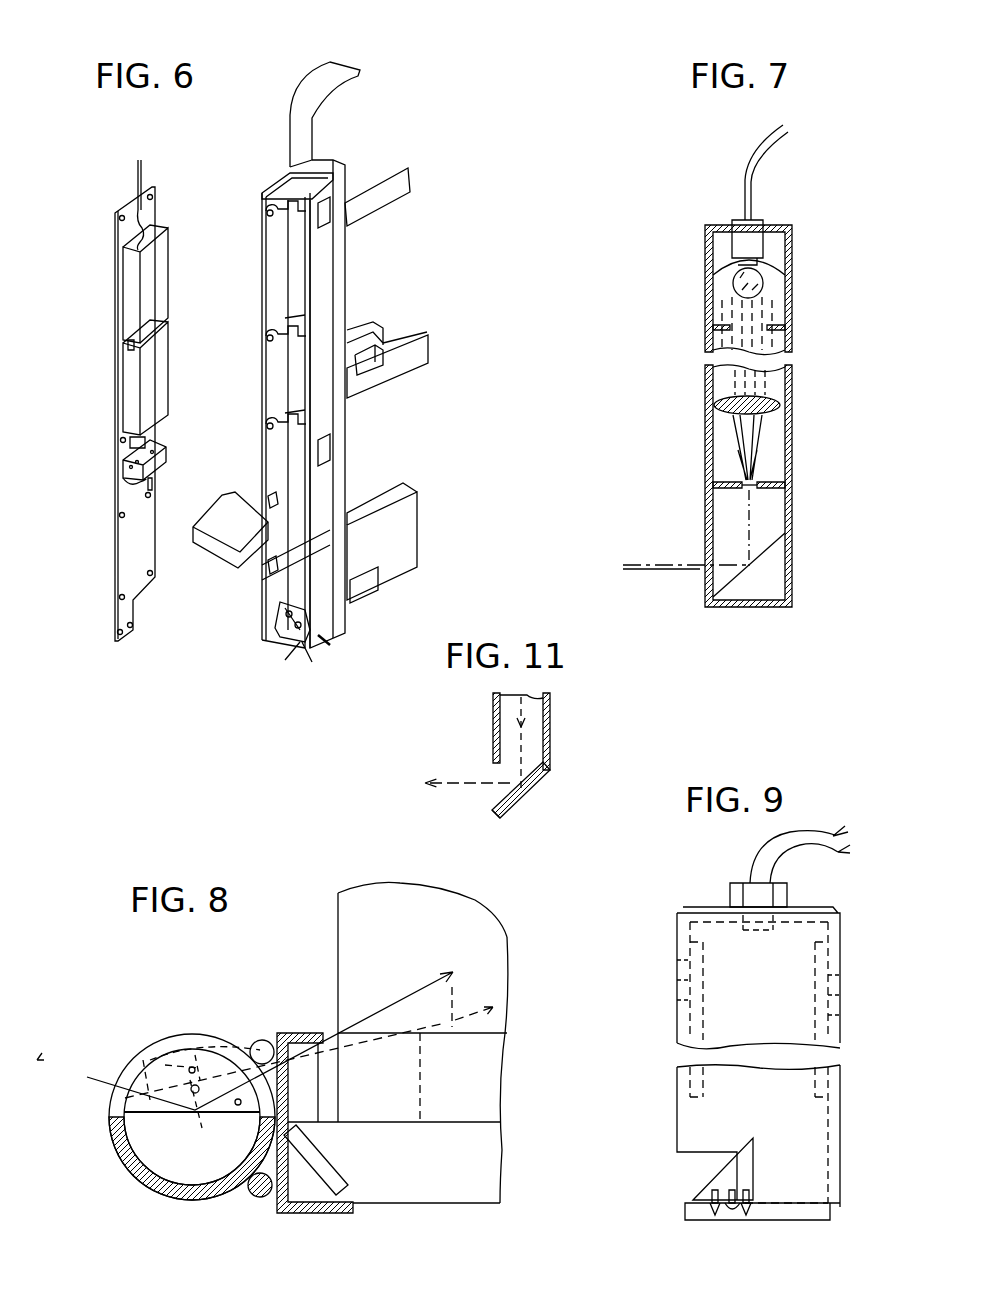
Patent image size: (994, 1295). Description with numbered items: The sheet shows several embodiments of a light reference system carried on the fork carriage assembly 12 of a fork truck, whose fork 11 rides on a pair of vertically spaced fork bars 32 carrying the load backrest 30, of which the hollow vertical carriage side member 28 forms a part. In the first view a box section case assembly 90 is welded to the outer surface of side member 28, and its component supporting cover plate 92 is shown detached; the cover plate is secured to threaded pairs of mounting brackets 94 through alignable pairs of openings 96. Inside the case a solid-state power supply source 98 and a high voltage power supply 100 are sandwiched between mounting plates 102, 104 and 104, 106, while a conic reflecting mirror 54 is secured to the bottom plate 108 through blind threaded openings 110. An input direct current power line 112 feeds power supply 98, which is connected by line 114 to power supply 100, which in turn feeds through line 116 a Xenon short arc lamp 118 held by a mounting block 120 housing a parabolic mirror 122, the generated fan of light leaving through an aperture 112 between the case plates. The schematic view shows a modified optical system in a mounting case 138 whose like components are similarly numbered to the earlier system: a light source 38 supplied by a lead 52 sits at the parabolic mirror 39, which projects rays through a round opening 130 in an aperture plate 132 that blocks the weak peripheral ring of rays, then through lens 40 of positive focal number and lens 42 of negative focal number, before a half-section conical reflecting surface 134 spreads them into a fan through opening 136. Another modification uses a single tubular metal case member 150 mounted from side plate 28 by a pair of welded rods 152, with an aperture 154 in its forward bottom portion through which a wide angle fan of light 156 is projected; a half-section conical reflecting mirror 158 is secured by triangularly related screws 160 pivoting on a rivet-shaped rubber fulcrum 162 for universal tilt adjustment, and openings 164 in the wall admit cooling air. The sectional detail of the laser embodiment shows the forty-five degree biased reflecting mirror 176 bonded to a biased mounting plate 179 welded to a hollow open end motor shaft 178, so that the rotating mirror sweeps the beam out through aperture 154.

In FIG. 6, the fork 11 is at (226, 503).
In FIG. 8, the fork 11 is at (355, 915).
In FIG. 6, the fork carriage assembly 12 is at (420, 451).
In FIG. 6, the fork carriage side member 28 is at (345, 290).
In FIG. 8, the fork carriage side member 28 is at (280, 1213).
In FIG. 6, the load backrest 30 is at (345, 87).
In FIG. 6, the fork bars 32 is at (432, 365).
In FIG. 8, the fork bars 32 is at (420, 1185).
In FIG. 7, the lamp bulb 38 is at (762, 290).
In FIG. 7, the parabolic mirror 39 is at (770, 265).
In FIG. 7, the first lens 40 is at (787, 400).
In FIG. 7, the second lens 42 is at (765, 483).
In FIG. 7, the cable 52 is at (768, 150).
In FIG. 6, the conic reflecting mirror 54 is at (282, 633).
In FIG. 6, the box section case assembly 90 is at (340, 634).
In FIG. 6, the cover plate 92 is at (130, 553).
In FIG. 6, the mounting brackets 94 is at (275, 207).
In FIG. 6, the openings 96 is at (152, 198).
In FIG. 6, the solid-state power supply source 98 is at (130, 278).
In FIG. 6, the high voltage power supply 100 is at (125, 382).
In FIG. 6, the mounting plate 102 is at (283, 183).
In FIG. 6, the mounting plate 104 is at (285, 320).
In FIG. 6, the mounting plate 106 is at (285, 415).
In FIG. 6, the bottom plate 108 is at (275, 655).
In FIG. 6, the blind threaded openings 110 is at (272, 622).
In FIG. 6, the input direct current power line 112 is at (135, 185).
In FIG. 9, the input direct current power line 112 is at (805, 850).
In FIG. 6, the line 114 is at (128, 342).
In FIG. 6, the line 116 is at (135, 440).
In FIG. 6, the Xenon short arc lamp 118 is at (150, 483).
In FIG. 6, the mounting block 120 is at (123, 465).
In FIG. 6, the parabolic mirror 122 is at (125, 477).
In FIG. 7, the round opening 130 is at (738, 330).
In FIG. 7, the aperture plate 132 is at (775, 332).
In FIG. 7, the half-section conical reflecting surface 134 is at (770, 583).
In FIG. 7, the opening 136 is at (705, 560).
In FIG. 7, the mounting case 138 is at (790, 517).
In FIG. 8, the tubular metal case member 150 is at (152, 1185).
In FIG. 8, the rods 152 is at (265, 1042).
In FIG. 11, the aperture 154 is at (492, 765).
In FIG. 8, the aperture 154 is at (180, 1038).
In FIG. 9, the aperture 154 is at (702, 1160).
In FIG. 8, the fan of light 156 is at (75, 1072).
In FIG. 8, the half-section conical reflecting mirror 158 is at (218, 1068).
In FIG. 9, the half-section conical reflecting mirror 158 is at (725, 1182).
In FIG. 8, the screws 160 is at (150, 1060).
In FIG. 9, the screws 160 is at (708, 1220).
In FIG. 8, the rubber fulcrum 162 is at (215, 1102).
In FIG. 9, the rubber fulcrum 162 is at (735, 1215).
In FIG. 9, the openings 164 is at (678, 1005).
In FIG. 11, the biased reflecting mirror 176 is at (540, 778).
In FIG. 11, the hollow open end motor shaft 178 is at (492, 720).
In FIG. 11, the biased mounting plate 179 is at (530, 792).